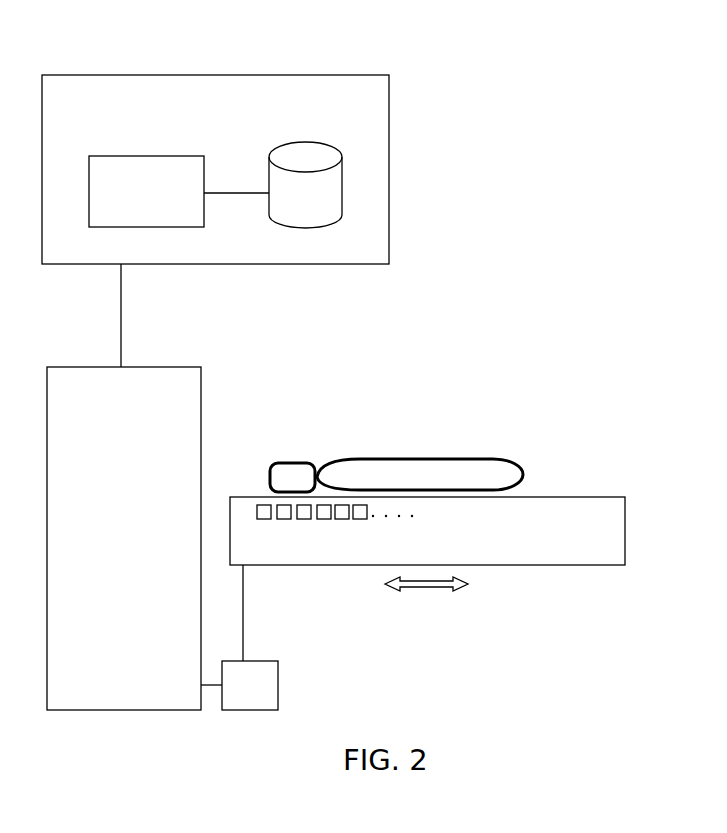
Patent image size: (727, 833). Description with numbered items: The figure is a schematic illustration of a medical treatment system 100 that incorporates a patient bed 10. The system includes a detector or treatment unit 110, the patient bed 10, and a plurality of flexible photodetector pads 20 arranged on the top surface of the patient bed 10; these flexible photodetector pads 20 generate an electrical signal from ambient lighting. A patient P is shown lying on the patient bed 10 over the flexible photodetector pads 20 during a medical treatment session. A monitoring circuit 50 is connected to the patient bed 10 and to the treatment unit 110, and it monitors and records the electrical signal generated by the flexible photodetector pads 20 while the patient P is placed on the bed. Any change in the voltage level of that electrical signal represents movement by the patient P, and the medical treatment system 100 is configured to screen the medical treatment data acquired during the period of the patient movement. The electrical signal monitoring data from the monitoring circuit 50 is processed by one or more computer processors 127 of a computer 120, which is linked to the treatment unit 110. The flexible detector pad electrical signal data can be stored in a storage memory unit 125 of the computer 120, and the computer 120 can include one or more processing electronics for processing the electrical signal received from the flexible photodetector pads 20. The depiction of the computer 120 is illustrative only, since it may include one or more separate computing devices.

The medical treatment system 100 is at (558, 256).
The detector or treatment unit 110 is at (146, 512).
The computer 120 is at (372, 102).
The storage memory unit 125 is at (327, 185).
The computer processor 127 is at (175, 163).
The patient bed 10 is at (570, 547).
The flexible photodetector pads 20 is at (320, 516).
The monitoring circuit 50 is at (252, 697).
The finger P is at (453, 467).